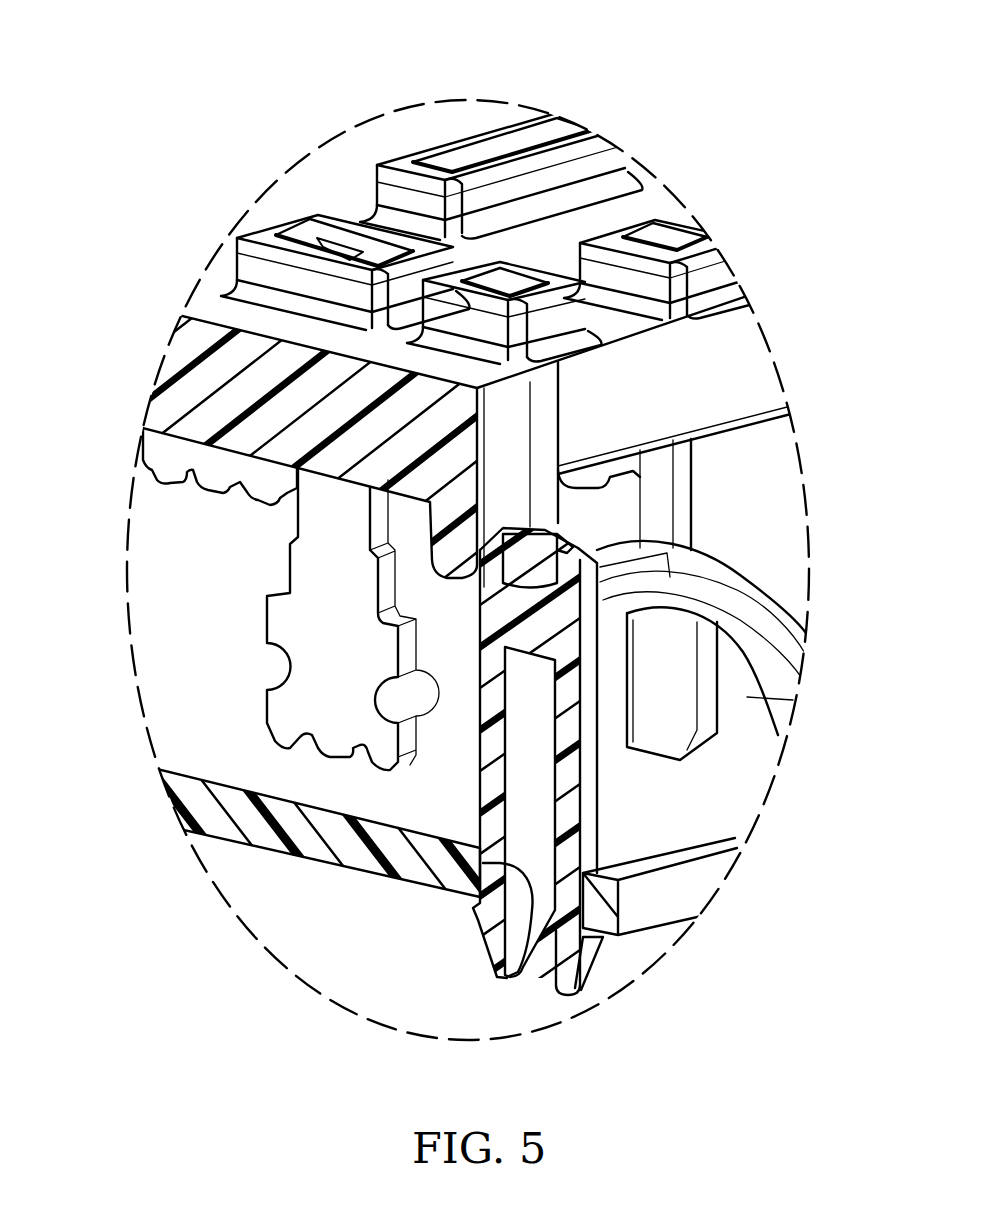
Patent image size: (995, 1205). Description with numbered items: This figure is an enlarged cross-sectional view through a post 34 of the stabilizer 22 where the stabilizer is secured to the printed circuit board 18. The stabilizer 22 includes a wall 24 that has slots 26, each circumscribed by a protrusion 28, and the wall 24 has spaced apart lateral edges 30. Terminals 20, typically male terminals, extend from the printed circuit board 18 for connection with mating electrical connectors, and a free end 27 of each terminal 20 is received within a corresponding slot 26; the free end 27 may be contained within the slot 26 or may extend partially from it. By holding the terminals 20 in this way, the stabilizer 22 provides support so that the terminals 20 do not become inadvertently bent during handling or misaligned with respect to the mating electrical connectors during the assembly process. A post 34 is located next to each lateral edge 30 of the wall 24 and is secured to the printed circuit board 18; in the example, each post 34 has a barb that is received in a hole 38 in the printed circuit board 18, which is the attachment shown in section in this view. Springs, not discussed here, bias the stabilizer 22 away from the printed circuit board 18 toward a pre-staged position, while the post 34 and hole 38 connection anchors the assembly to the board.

The printed circuit board 18 is at (667, 887).
The terminal 20 is at (335, 587).
The stabilizer 22 is at (470, 123).
The wall 24 is at (690, 363).
The slot 26 is at (300, 233).
The free end 27 is at (343, 242).
The protrusion 28 is at (255, 267).
The lateral edge 30 is at (185, 398).
The post 34 is at (598, 762).
The hole 38 is at (522, 948).